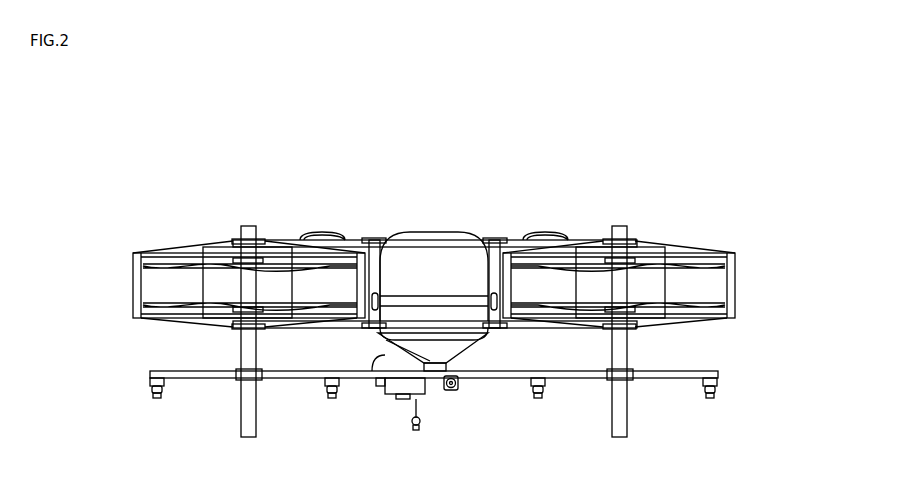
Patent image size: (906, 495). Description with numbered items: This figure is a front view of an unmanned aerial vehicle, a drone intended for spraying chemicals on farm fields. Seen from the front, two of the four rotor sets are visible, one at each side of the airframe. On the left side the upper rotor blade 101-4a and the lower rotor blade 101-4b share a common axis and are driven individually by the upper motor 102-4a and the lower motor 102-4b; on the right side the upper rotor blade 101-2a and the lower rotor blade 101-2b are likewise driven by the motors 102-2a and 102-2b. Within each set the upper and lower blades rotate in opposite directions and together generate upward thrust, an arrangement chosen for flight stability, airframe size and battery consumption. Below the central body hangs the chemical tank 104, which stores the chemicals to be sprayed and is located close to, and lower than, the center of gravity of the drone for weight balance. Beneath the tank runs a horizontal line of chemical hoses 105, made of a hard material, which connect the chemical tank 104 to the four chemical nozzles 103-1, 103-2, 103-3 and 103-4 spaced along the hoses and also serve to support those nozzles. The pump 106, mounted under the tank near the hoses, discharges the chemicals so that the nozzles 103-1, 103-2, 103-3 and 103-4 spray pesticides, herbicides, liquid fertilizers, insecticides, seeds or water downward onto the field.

The rotor blade 101-4a is at (186, 250).
The rotor blade 101-4b is at (186, 320).
The motor 102-4a is at (276, 262).
The motor 102-4b is at (234, 306).
The rotor blade 101-2a is at (690, 250).
The rotor blade 101-2b is at (690, 320).
The motor 102-2a is at (593, 262).
The motor 102-2b is at (634, 306).
The chemical nozzle 103-1 is at (710, 400).
The chemical nozzle 103-2 is at (538, 400).
The chemical nozzle 103-3 is at (332, 400).
The chemical nozzle 103-4 is at (157, 400).
The chemical tank 104 is at (472, 344).
The chemical hose 105 is at (205, 379).
The pump 106 is at (391, 395).